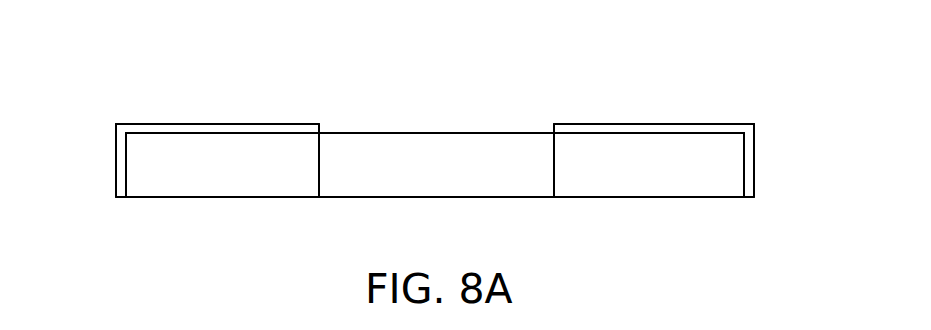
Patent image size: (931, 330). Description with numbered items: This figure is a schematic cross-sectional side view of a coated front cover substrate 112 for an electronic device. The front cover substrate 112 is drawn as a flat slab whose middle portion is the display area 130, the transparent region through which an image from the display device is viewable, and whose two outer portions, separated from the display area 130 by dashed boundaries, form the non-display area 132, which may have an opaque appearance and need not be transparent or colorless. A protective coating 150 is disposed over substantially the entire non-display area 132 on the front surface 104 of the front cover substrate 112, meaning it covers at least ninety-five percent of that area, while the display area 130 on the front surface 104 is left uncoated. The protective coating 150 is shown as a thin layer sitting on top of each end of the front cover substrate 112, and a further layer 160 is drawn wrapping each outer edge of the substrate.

The front cover substrate 112 is at (505, 113).
The front surface 104 is at (577, 132).
The protective coating 150 is at (140, 123).
The side cover layer 160 is at (115, 163).
The non-display area 132 is at (225, 198).
The display area 130 is at (527, 198).